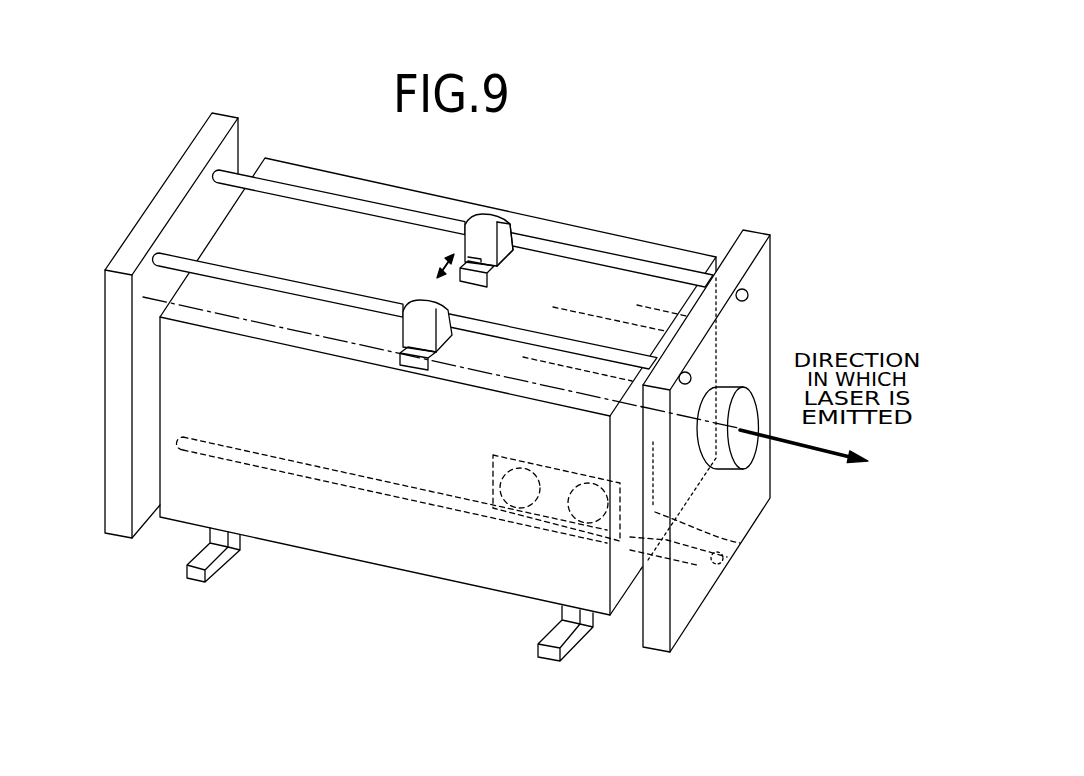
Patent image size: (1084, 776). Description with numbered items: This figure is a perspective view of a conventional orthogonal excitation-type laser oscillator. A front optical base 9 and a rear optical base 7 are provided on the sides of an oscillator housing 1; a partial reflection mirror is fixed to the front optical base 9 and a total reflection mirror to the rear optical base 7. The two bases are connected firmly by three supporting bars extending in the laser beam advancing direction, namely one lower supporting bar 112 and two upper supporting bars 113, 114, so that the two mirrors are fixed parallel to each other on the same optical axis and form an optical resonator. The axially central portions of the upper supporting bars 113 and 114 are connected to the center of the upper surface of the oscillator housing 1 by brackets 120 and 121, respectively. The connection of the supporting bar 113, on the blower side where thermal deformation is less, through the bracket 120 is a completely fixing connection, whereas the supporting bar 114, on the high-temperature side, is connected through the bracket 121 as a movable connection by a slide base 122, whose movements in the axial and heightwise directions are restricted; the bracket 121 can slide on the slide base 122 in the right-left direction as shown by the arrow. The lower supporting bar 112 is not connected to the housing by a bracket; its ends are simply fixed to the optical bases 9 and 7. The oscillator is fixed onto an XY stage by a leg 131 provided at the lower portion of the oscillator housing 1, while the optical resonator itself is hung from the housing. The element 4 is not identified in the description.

The oscillator housing 1 is at (698, 252).
The laser medium 4 is at (740, 543).
The rear optical base 7 is at (103, 333).
The front optical base 9 is at (763, 320).
The lower supporting bar 112 is at (700, 569).
The supporting bar 113 is at (480, 327).
The supporting bar 114 is at (562, 247).
The bracket 120 is at (422, 303).
The bracket 121 is at (483, 224).
The slide base 122 is at (508, 250).
The leg 131 is at (220, 563).